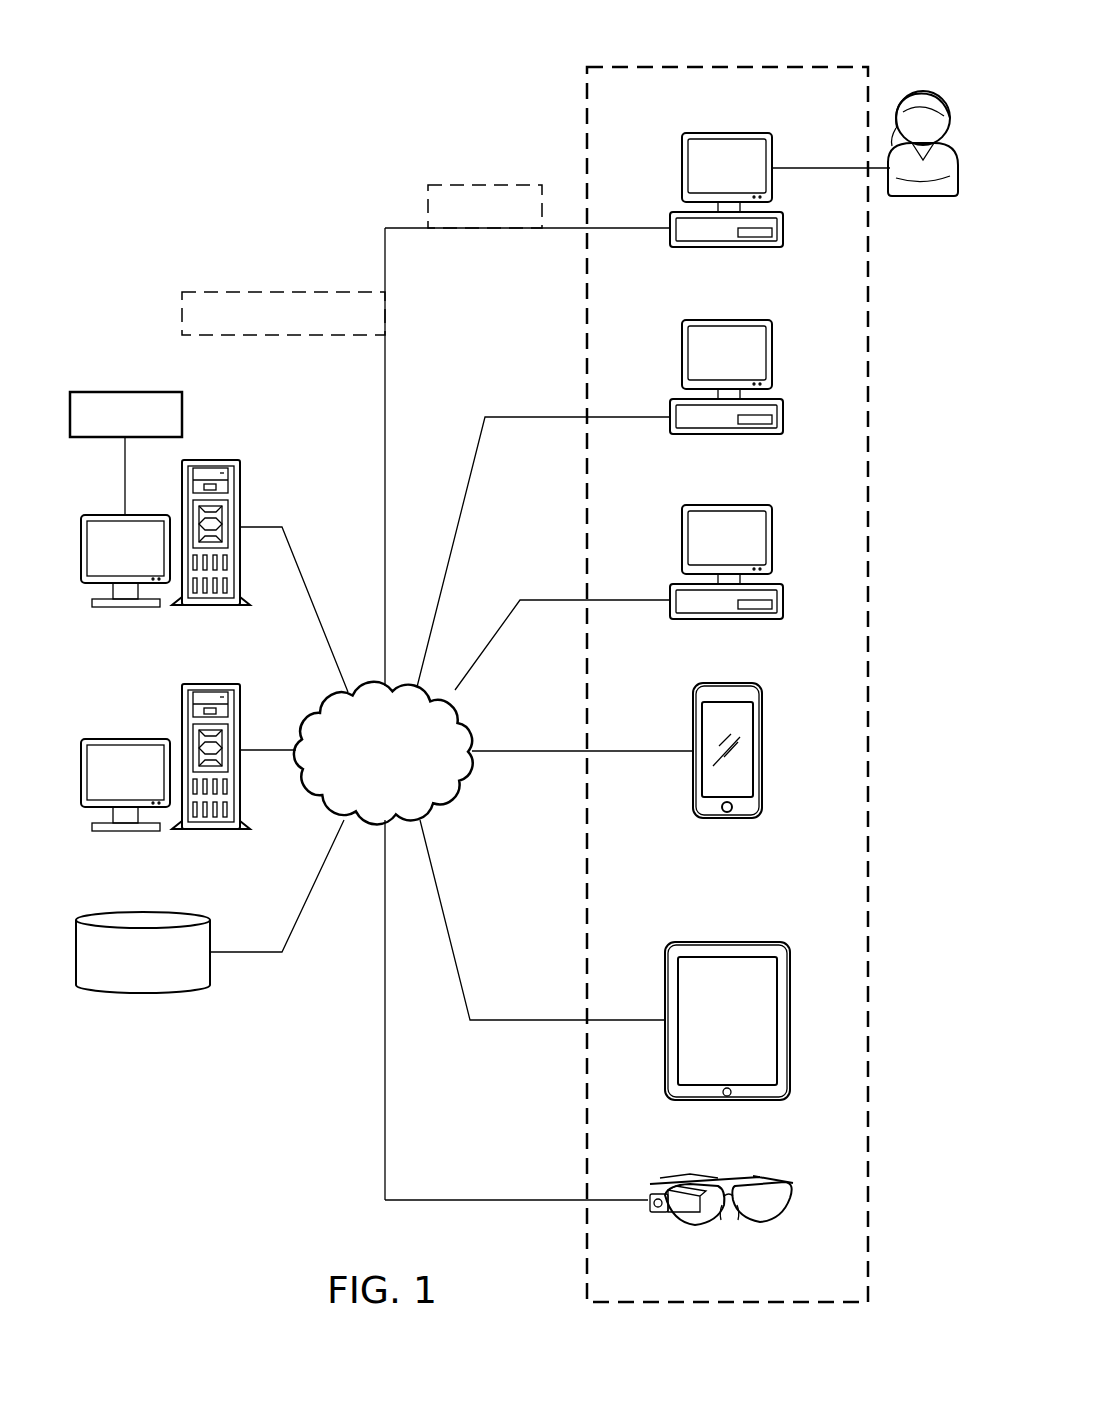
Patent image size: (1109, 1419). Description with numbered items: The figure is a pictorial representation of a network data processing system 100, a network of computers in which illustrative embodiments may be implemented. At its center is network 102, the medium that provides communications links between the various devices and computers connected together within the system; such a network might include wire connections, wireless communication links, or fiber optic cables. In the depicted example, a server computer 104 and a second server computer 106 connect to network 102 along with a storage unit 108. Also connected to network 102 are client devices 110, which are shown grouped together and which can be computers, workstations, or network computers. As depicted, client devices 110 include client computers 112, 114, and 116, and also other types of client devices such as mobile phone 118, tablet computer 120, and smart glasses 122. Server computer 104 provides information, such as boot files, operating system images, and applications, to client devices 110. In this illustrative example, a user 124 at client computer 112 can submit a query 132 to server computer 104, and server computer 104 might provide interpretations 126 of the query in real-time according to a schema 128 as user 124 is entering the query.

The network data processing system 100 is at (202, 186).
The network 102 is at (405, 784).
The server computer 104 is at (104, 514).
The server computer 106 is at (124, 738).
The storage unit 108 is at (143, 997).
The client devices 110 is at (782, 62).
The client computer 112 is at (775, 156).
The client computer 114 is at (775, 353).
The client computer 116 is at (775, 538).
The mobile phone 118 is at (763, 769).
The tablet computer 120 is at (750, 1037).
The smart glasses 122 is at (676, 1224).
The user 124 is at (942, 98).
The interpretations 126 is at (486, 184).
The schema 128 is at (113, 391).
The query 132 is at (268, 291).